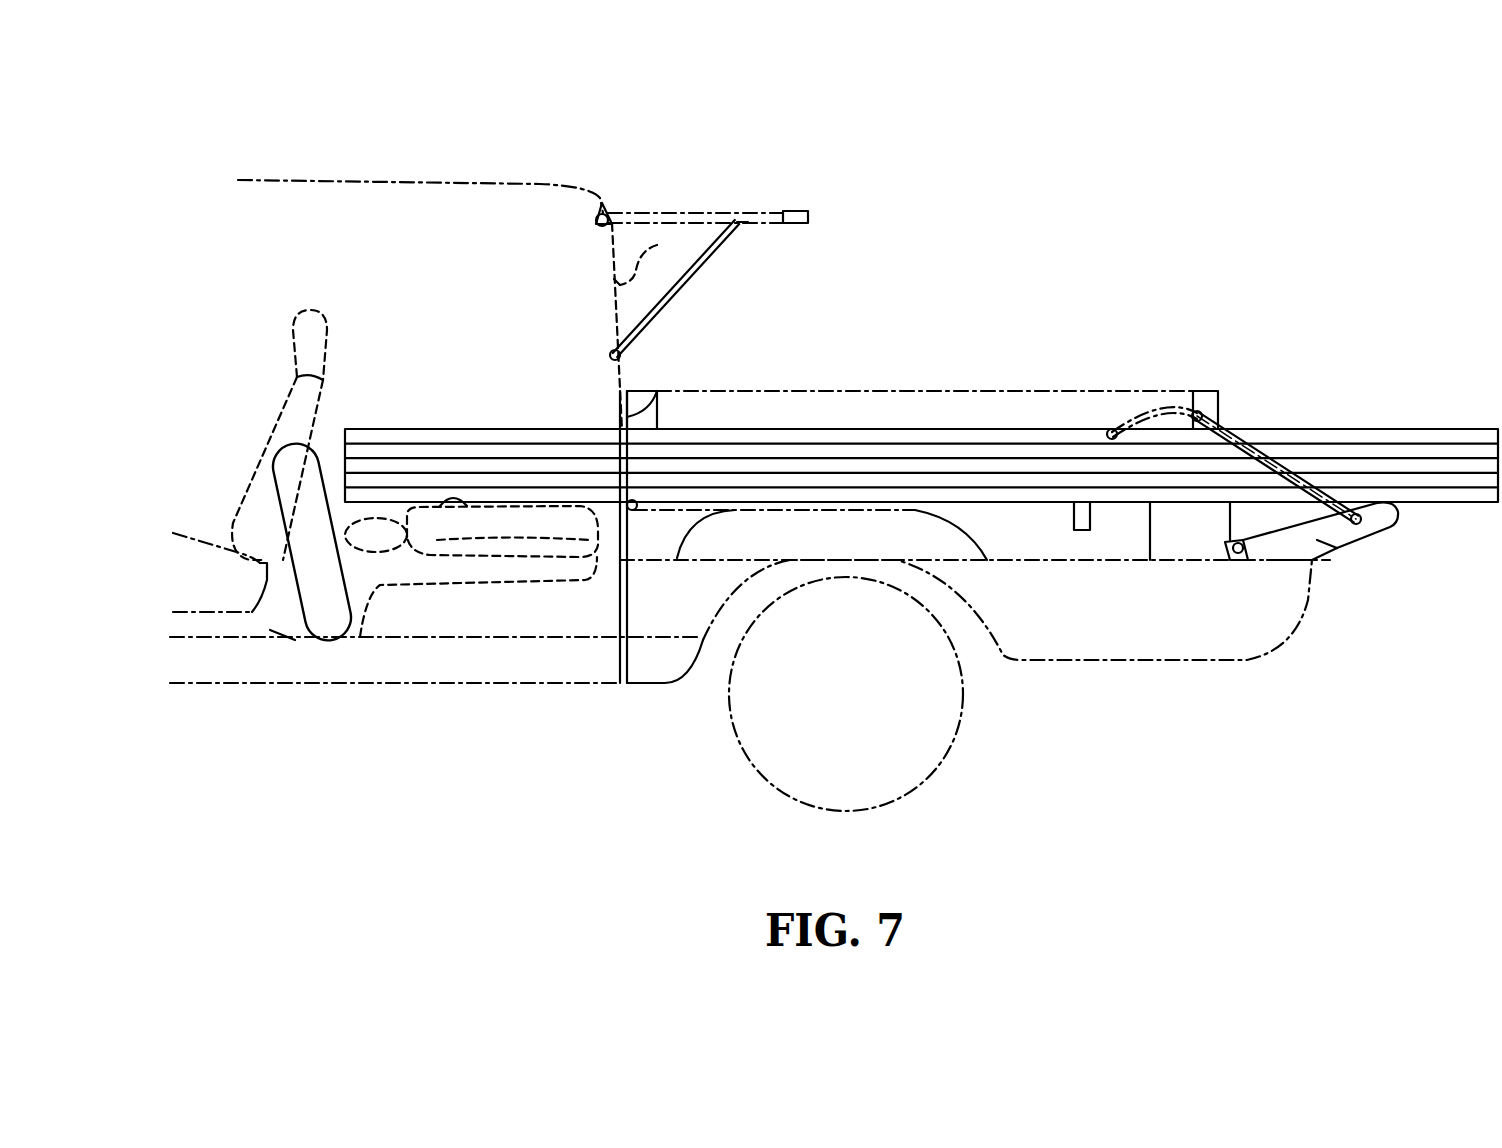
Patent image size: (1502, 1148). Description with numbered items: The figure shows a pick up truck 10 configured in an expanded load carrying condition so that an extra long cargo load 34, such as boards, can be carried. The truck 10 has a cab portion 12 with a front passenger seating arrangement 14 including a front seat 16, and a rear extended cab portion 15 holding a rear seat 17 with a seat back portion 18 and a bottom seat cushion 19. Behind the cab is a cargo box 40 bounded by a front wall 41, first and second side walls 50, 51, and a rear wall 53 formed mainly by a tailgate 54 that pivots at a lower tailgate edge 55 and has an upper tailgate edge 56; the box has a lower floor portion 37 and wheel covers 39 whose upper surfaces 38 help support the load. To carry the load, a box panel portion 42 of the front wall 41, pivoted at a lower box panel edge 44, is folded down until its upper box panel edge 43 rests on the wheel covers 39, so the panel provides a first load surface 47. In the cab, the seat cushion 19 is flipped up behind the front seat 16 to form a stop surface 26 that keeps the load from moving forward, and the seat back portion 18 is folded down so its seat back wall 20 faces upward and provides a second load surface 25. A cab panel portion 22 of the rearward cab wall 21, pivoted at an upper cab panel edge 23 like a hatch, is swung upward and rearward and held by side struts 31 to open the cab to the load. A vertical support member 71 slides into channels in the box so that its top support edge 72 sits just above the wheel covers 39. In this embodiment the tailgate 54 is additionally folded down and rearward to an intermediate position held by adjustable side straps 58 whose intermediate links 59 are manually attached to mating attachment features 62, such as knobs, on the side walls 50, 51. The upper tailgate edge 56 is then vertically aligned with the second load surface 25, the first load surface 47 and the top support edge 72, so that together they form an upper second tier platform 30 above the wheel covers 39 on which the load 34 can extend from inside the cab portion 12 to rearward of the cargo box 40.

The pick up truck 10 is at (834, 463).
The cab portion 12 is at (558, 172).
The front passenger seating arrangement 14 is at (243, 435).
The rear extended cab portion 15 is at (427, 357).
The front seat 16 is at (266, 500).
The rear seat 17 is at (306, 646).
The seat back portion 18 is at (520, 545).
The bottom seat cushion 19 is at (282, 627).
The seat back wall 20 is at (471, 542).
The rearward cab wall 21 is at (648, 252).
The cab panel portion 22 is at (748, 200).
The upper cab panel edge 23 is at (606, 204).
The second load surface 25 is at (522, 502).
The stop surface 26 is at (360, 513).
The upper second tier platform 30 is at (562, 488).
The side struts 31 is at (720, 245).
The cargo load 34 is at (781, 418).
The lower floor portion 37 is at (1151, 500).
The upper surfaces 38 is at (854, 510).
The wheel covers 39 is at (914, 492).
The cargo box 40 is at (843, 380).
The front wall 41 is at (656, 391).
The box panel portion 42 is at (662, 520).
The upper box panel edge 43 is at (746, 509).
The lower box panel edge 44 is at (641, 512).
The first load surface 47 is at (687, 440).
The first side wall 50 is at (925, 336).
The second side wall 51 is at (979, 390).
The rear wall 53 is at (1213, 406).
The tailgate 54 is at (1340, 548).
The lower tailgate edge 55 is at (1252, 548).
The upper tailgate edge 56 is at (1392, 513).
The adjustable side straps 58 is at (1237, 431).
The intermediate links 59 is at (1181, 373).
The mating attachment features 62 is at (1198, 384).
The support member 71 is at (1078, 532).
The top support edge 72 is at (1084, 478).